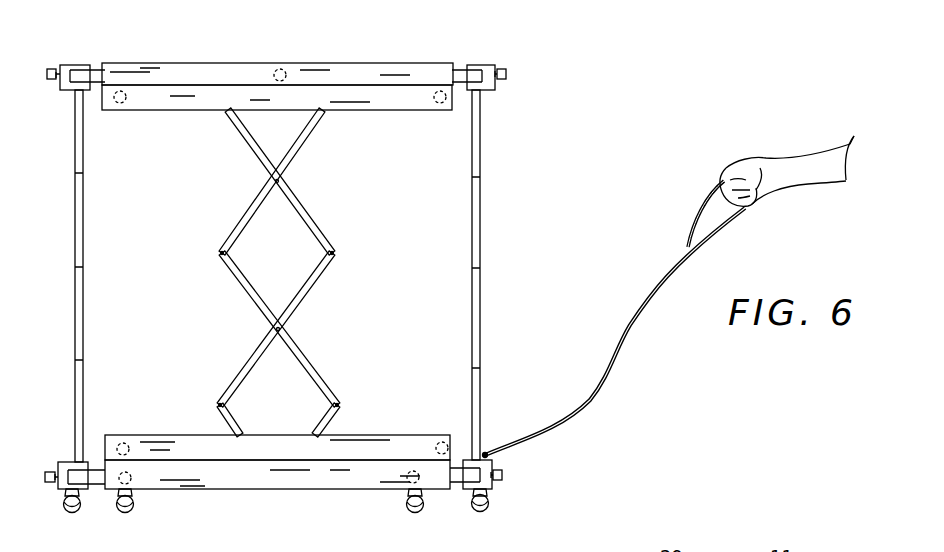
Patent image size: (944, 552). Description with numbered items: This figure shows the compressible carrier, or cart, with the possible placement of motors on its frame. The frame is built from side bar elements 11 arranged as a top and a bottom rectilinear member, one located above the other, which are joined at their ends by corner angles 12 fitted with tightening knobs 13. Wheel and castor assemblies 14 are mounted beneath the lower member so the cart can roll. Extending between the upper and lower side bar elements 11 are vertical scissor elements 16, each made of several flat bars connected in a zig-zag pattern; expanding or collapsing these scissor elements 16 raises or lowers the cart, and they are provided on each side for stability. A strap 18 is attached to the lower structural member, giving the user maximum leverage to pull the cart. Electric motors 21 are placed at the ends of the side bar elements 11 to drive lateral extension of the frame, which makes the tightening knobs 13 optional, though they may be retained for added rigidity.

The side bar element 11 is at (370, 67).
The corner angle 12 is at (467, 68).
The tightening knob 13 is at (507, 76).
The wheel and castor assembly 14 is at (490, 505).
The vertical scissor element 16 is at (82, 290).
The strap 18 is at (613, 365).
The electric motor 21 is at (280, 69).